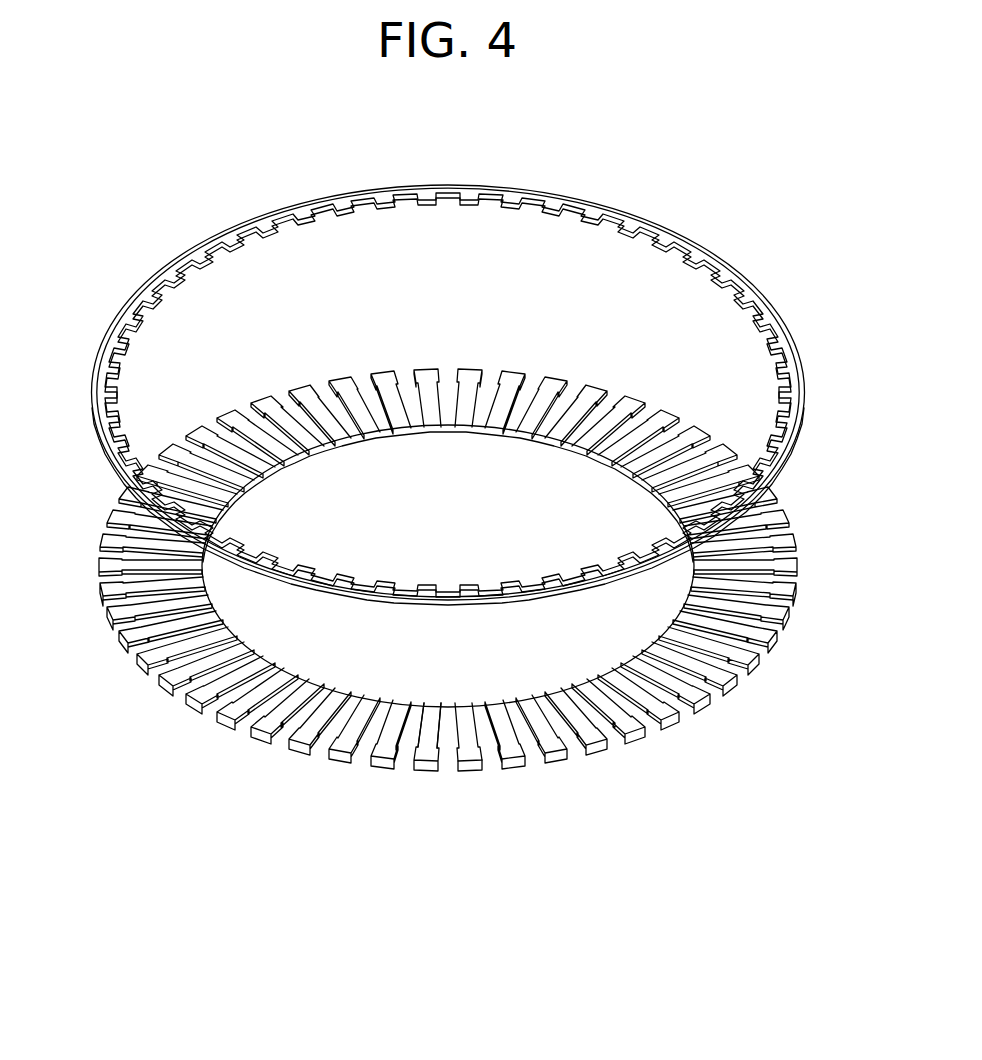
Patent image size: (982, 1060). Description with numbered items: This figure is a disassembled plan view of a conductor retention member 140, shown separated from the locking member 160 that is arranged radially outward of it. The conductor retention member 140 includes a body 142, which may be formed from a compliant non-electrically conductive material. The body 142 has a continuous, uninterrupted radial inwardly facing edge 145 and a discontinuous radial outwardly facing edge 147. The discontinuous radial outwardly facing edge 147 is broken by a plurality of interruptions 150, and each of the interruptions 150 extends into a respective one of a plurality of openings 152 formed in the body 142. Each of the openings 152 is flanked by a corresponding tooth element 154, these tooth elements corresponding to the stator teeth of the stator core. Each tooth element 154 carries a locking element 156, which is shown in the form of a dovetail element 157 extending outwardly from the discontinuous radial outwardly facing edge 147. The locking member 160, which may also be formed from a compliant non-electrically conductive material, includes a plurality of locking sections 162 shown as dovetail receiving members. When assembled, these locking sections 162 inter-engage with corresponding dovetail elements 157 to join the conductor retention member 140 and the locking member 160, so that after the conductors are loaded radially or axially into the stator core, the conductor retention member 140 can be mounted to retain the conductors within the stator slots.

The conductor retention member 140 is at (190, 190).
The locking member 160 is at (672, 205).
The locking sections 162 is at (657, 262).
The interruptions 150 is at (447, 784).
The body 142 is at (263, 666).
The radial inwardly facing edge 145 is at (427, 748).
The radial outwardly facing edge 147 is at (563, 762).
The openings 152 is at (440, 733).
The tooth element 154 is at (410, 735).
The locking element 156 is at (483, 763).
The dovetail element 157 is at (455, 767).